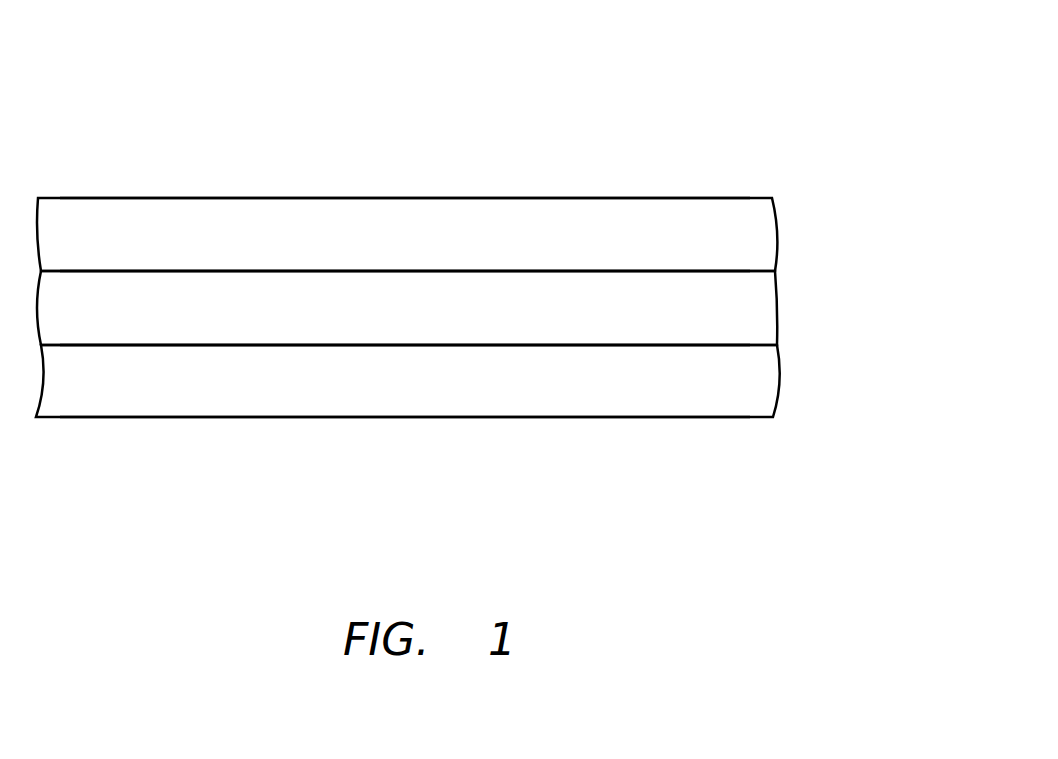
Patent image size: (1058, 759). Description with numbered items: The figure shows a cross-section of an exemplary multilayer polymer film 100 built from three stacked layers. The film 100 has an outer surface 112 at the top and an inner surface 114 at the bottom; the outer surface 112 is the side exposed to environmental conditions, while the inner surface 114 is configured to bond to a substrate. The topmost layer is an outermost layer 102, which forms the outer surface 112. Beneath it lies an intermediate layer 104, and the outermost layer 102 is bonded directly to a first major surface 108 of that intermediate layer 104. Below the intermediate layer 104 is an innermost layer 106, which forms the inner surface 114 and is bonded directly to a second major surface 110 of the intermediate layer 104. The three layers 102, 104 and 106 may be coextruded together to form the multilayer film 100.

The multilayer film 100 is at (828, 60).
The outermost layer 102 is at (755, 233).
The intermediate layer 104 is at (758, 315).
The innermost layer 106 is at (757, 382).
The first major surface 108 is at (425, 271).
The second major surface 110 is at (442, 345).
The outer surface 112 is at (298, 198).
The inner surface 114 is at (258, 418).